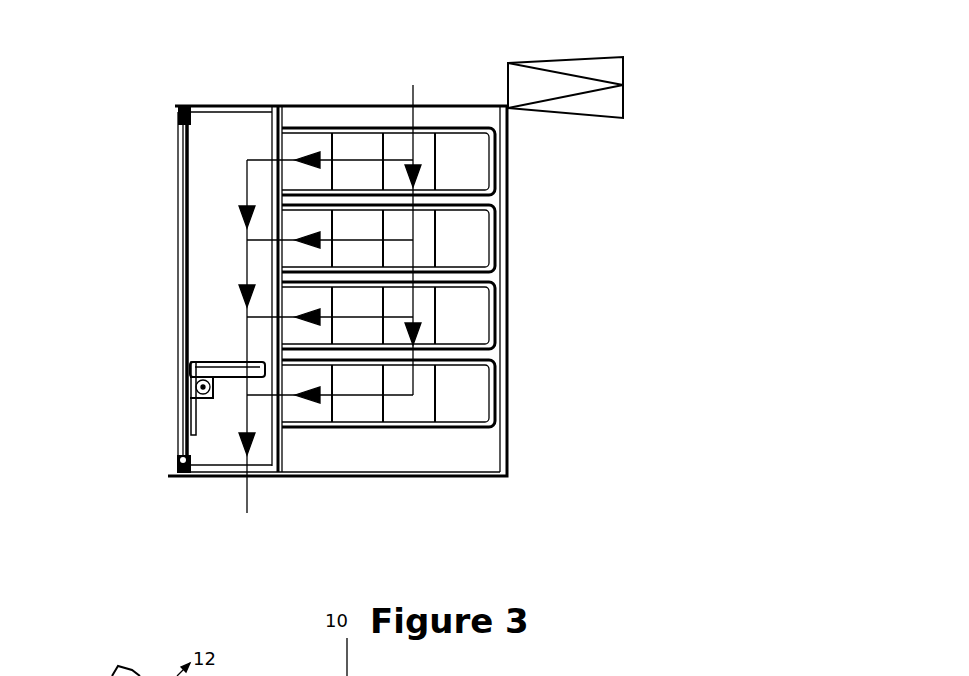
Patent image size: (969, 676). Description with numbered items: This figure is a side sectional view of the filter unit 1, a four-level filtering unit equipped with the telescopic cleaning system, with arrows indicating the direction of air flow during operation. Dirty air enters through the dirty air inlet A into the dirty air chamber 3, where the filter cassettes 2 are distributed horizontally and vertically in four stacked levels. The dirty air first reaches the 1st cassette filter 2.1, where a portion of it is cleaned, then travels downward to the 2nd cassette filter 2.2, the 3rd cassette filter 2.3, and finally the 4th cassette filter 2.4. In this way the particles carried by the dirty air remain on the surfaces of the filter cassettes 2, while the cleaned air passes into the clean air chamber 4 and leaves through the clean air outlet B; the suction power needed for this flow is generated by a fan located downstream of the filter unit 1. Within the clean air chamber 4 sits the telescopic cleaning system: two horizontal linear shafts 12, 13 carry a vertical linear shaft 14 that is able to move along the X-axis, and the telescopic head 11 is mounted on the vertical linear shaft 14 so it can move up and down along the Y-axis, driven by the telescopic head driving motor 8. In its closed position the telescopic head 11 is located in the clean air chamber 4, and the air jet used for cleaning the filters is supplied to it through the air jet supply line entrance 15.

The filter unit 1 is at (170, 57).
The filter cassettes 2 is at (480, 277).
The 1st cassette filter 2.1 is at (495, 165).
The 2nd cassette filter 2.2 is at (495, 248).
The 3rd cassette filter 2.3 is at (495, 330).
The 4th cassette filter 2.4 is at (497, 395).
The dirty air chamber 3 is at (353, 120).
The clean air chamber 4 is at (230, 138).
The telescopic head driving motor 8 is at (188, 368).
The telescopic head 11 is at (230, 358).
The horizontal linear shaft 12 is at (180, 118).
The horizontal linear shaft 13 is at (178, 455).
The vertical linear shaft 14 is at (178, 230).
The air jet supply line entrance 15 is at (188, 408).
The dirty air inlet A is at (443, 85).
The clean air outlet B is at (247, 513).